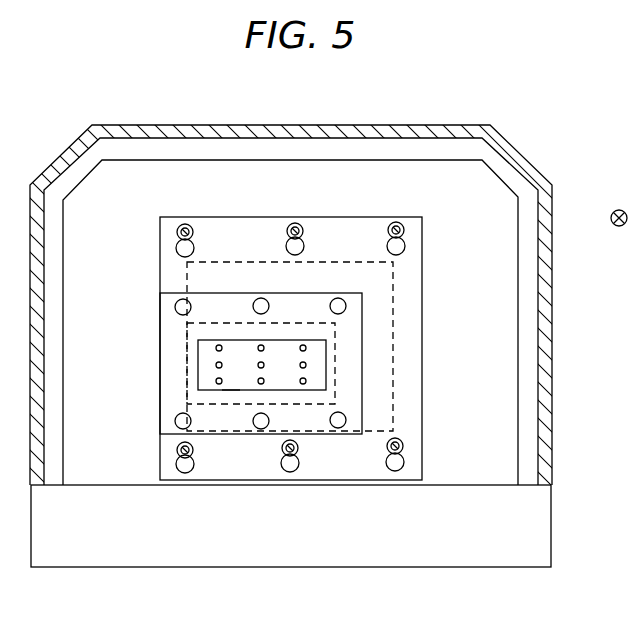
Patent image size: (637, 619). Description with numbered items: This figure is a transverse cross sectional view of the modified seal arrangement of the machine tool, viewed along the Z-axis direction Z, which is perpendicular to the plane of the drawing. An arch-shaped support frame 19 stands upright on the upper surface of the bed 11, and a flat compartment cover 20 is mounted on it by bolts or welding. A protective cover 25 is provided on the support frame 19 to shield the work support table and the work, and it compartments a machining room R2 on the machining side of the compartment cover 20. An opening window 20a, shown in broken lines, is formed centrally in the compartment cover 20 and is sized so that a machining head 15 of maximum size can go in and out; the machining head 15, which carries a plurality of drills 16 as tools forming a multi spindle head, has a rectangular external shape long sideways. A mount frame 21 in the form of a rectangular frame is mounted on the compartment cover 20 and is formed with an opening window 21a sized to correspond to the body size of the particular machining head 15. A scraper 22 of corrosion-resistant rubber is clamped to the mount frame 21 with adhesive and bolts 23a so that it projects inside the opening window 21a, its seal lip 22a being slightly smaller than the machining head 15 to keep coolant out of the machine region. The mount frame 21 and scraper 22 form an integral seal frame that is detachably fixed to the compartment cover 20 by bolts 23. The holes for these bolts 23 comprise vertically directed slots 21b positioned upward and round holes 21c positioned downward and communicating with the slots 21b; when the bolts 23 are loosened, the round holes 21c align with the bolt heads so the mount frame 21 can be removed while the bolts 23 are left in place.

The bed 11 is at (535, 524).
The machining head 15 is at (198, 362).
The drills 16 is at (303, 344).
The support frame 19 is at (528, 353).
The compartment cover 20 is at (318, 309).
The opening window 20a is at (187, 265).
The mount frame 21 is at (422, 258).
The opening window 21a is at (336, 375).
The slots 21b is at (177, 230).
The round holes 21c is at (177, 247).
The scraper 22 is at (357, 340).
The seal lip 22a is at (231, 391).
The bolts 23 is at (291, 350).
The bolts 23a is at (259, 298).
The protective cover 25 is at (552, 276).
The machining room R2 is at (508, 220).
The Z-axis direction Z is at (619, 210).